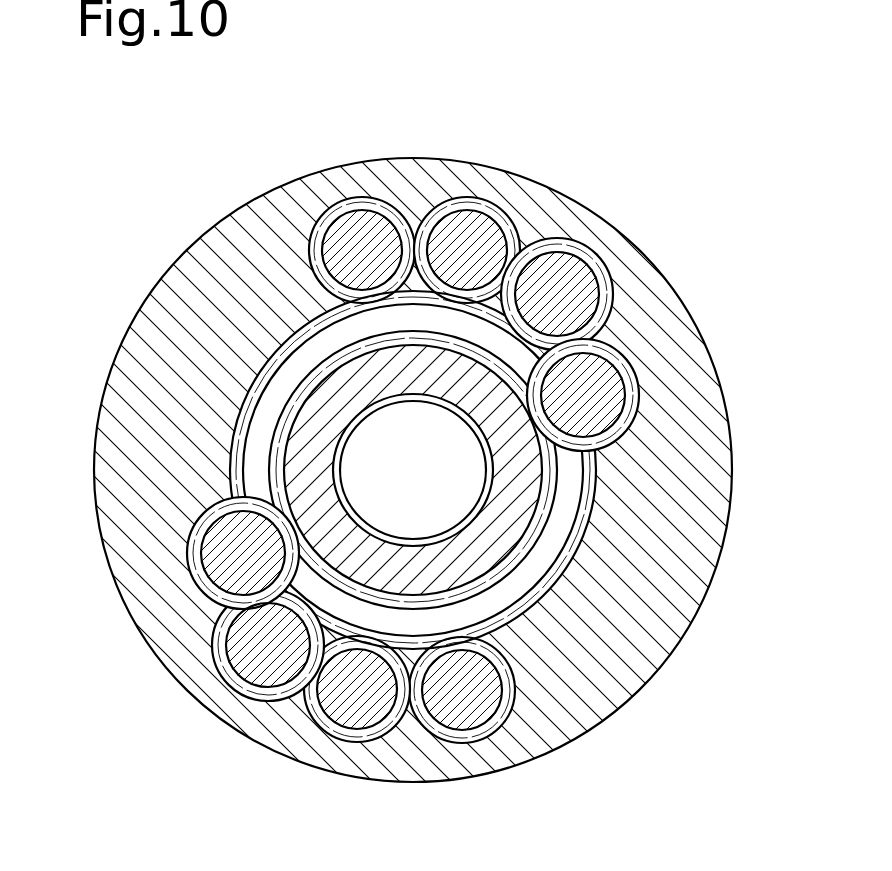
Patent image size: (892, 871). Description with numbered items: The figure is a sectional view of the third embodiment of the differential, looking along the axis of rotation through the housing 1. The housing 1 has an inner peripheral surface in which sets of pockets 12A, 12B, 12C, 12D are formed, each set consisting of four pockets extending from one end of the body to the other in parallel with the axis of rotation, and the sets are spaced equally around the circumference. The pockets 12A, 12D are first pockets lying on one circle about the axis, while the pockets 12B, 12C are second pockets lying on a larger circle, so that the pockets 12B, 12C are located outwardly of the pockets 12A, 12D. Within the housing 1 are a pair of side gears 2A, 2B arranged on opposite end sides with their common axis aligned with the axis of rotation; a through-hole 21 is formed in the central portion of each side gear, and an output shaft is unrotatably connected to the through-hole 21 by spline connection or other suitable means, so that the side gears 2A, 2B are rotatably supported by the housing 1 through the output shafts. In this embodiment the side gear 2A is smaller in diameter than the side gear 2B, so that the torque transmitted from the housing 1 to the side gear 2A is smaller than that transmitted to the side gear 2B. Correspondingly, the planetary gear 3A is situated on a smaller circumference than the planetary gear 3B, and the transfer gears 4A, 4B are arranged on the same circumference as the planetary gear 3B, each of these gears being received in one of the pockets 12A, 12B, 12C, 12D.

The housing 1 is at (627, 240).
The side gear 2A is at (508, 515).
The side gear 2B is at (571, 488).
The planetary gear 3A is at (607, 398).
The planetary gear 3B is at (337, 240).
The transfer gear 4A is at (592, 287).
The transfer gear 4B is at (452, 228).
The pocket 12A is at (627, 370).
The pocket 12B is at (578, 247).
The pocket 12C is at (482, 210).
The pocket 12D is at (343, 208).
The through-hole 21 is at (404, 394).